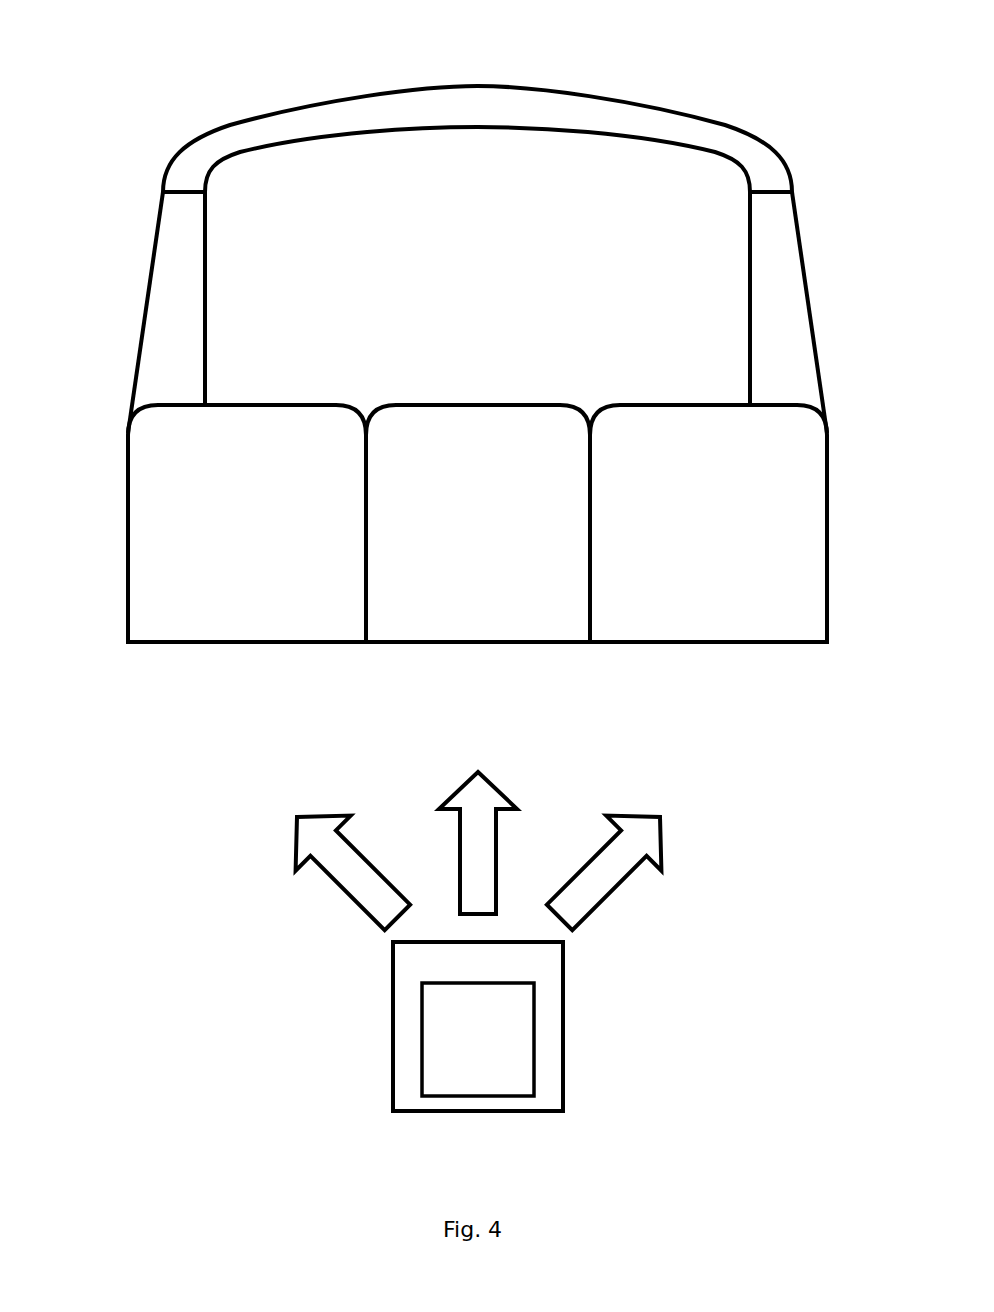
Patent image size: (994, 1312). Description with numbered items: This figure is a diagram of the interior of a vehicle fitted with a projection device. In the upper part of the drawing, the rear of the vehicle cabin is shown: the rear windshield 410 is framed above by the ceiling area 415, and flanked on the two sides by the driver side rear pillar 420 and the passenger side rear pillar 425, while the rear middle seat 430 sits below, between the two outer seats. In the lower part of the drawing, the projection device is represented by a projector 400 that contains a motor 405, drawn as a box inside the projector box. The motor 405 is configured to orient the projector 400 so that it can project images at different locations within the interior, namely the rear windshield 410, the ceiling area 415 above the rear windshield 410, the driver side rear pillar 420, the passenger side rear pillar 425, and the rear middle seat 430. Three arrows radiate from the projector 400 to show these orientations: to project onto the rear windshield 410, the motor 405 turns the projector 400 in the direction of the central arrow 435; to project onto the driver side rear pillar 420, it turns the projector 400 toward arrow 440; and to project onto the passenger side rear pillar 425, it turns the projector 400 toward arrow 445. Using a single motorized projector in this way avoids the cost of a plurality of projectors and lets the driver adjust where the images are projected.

The projector 400 is at (393, 1025).
The motor 405 is at (534, 1040).
The rear windshield 410 is at (715, 160).
The ceiling area 415 is at (478, 86).
The driver side rear pillar 420 is at (812, 327).
The passenger side rear pillar 425 is at (143, 325).
The rear middle seat 430 is at (477, 403).
The arrow 435 is at (498, 857).
The arrow 440 is at (608, 898).
The arrow 445 is at (348, 898).